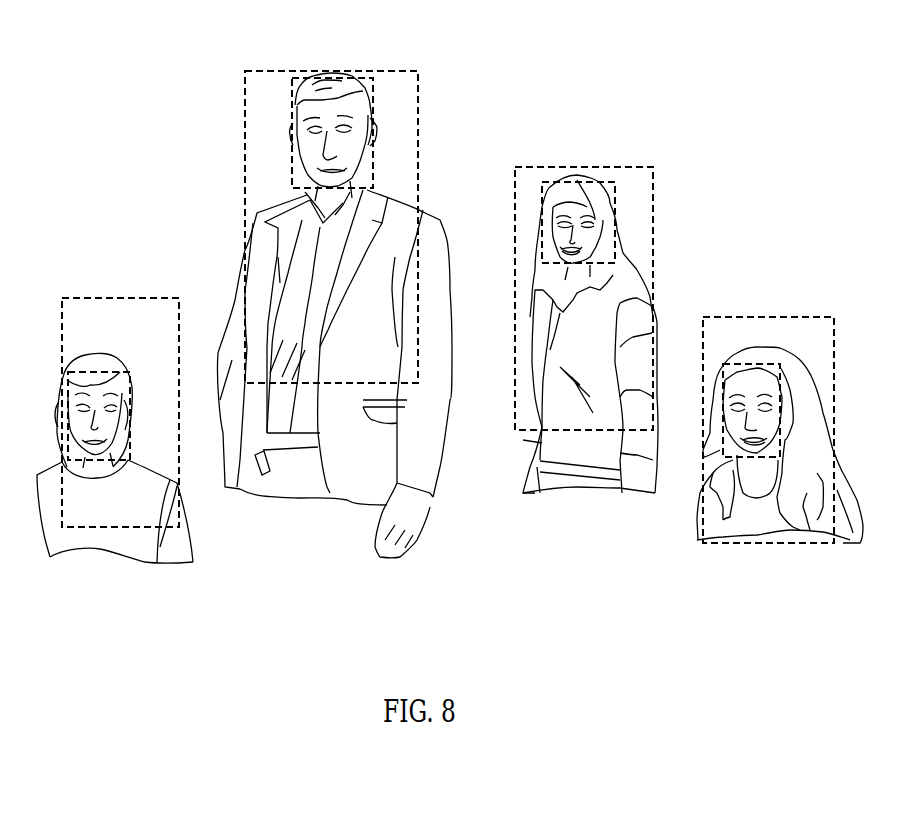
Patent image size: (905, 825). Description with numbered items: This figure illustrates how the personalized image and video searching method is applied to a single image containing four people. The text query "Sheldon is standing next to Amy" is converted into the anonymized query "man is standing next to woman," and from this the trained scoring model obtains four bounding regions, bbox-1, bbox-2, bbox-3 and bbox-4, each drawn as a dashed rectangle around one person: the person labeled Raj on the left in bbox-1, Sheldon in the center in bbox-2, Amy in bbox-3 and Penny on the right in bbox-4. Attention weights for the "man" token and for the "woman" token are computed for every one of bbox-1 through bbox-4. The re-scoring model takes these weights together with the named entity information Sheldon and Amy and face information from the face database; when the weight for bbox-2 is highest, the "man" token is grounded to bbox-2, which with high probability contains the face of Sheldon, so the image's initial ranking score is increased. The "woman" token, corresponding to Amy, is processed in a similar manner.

The bounding region bbox-1 is at (120, 297).
The bounding region bbox-2 is at (285, 66).
The bounding region bbox-3 is at (590, 163).
The bounding region bbox-4 is at (725, 313).
The identified person Raj is at (97, 478).
The named entity Sheldon is at (287, 128).
The named entity Amy is at (622, 202).
The identified person Penny is at (773, 350).